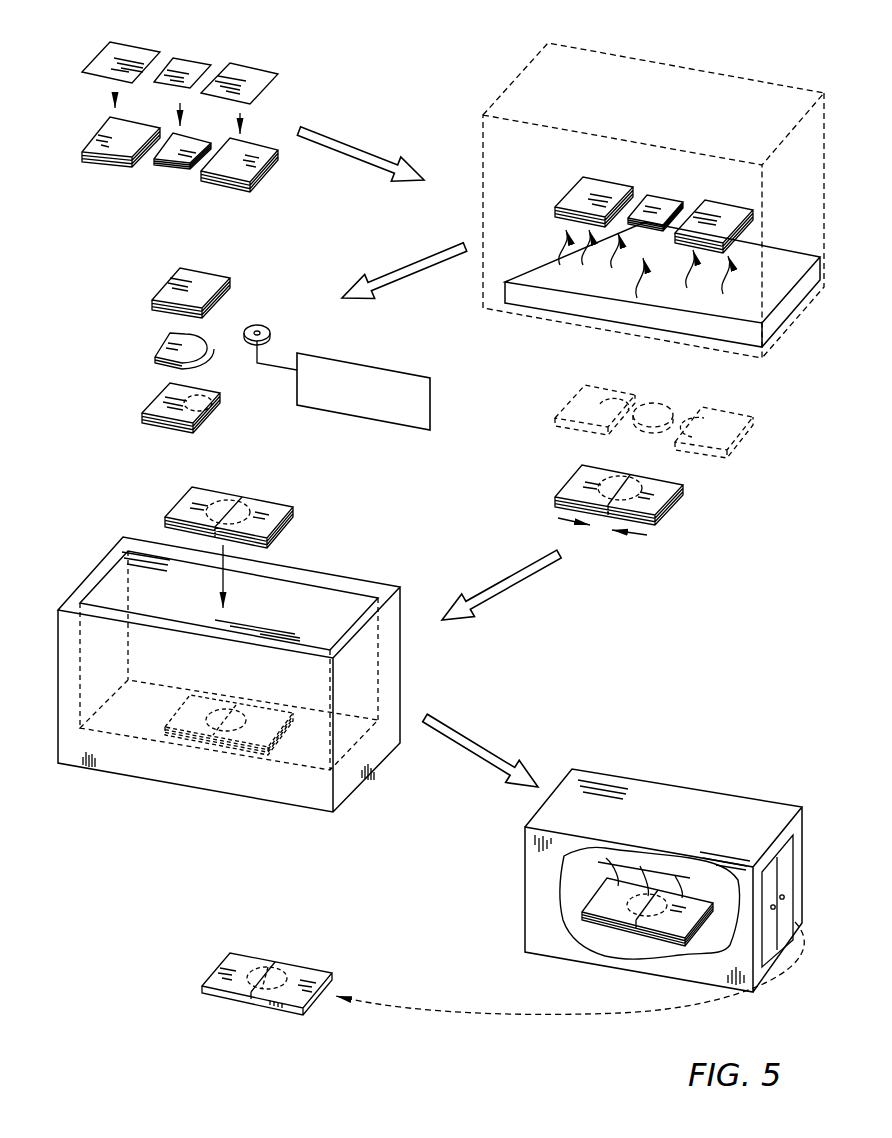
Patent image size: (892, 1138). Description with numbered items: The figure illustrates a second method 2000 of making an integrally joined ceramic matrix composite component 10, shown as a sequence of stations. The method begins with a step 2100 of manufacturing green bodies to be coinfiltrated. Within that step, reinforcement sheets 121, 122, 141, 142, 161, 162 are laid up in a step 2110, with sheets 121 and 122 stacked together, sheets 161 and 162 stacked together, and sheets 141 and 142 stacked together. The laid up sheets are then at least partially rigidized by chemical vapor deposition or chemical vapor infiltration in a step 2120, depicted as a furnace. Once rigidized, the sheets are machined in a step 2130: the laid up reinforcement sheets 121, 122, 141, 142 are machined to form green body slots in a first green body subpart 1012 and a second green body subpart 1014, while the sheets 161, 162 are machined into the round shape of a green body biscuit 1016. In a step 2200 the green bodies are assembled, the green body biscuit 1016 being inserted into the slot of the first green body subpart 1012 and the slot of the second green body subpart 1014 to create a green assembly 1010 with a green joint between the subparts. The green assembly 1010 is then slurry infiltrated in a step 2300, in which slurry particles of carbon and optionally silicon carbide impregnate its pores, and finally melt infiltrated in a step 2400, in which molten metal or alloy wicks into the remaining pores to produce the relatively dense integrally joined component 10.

The reinforcement sheet 121 is at (132, 53).
The reinforcement sheet 161 is at (190, 65).
The reinforcement sheet 141 is at (257, 82).
The reinforcement sheet 122 is at (128, 147).
The reinforcement sheet 162 is at (175, 158).
The reinforcement sheet 142 is at (257, 150).
The laying up step 2110 is at (163, 180).
The manufacturing green bodies step 2100 is at (312, 243).
The rigidizing step 2120 is at (452, 216).
The machining step 2130 is at (162, 375).
The second method 2000 is at (725, 55).
The first green body subpart 1012 is at (622, 392).
The green body biscuit 1016 is at (662, 402).
The second green body subpart 1014 is at (733, 408).
The green assembly 1010 is at (625, 467).
The assembling green bodies step 2200 is at (702, 478).
The slurry infiltrating step 2300 is at (148, 537).
The melt infiltration step 2400 is at (675, 770).
The integrally joined ceramic matrix composite component 10 is at (272, 962).